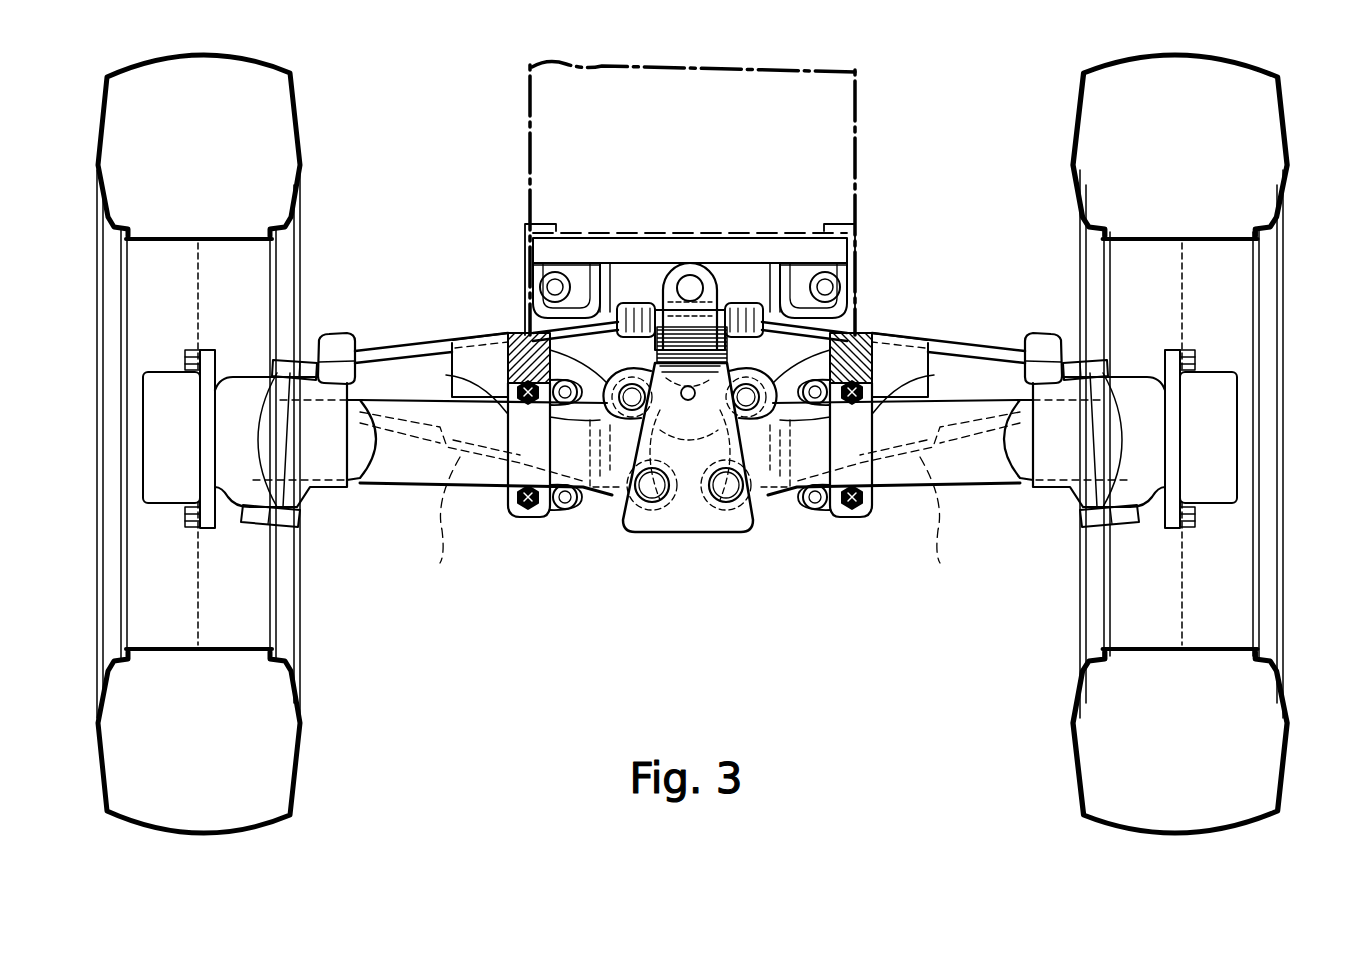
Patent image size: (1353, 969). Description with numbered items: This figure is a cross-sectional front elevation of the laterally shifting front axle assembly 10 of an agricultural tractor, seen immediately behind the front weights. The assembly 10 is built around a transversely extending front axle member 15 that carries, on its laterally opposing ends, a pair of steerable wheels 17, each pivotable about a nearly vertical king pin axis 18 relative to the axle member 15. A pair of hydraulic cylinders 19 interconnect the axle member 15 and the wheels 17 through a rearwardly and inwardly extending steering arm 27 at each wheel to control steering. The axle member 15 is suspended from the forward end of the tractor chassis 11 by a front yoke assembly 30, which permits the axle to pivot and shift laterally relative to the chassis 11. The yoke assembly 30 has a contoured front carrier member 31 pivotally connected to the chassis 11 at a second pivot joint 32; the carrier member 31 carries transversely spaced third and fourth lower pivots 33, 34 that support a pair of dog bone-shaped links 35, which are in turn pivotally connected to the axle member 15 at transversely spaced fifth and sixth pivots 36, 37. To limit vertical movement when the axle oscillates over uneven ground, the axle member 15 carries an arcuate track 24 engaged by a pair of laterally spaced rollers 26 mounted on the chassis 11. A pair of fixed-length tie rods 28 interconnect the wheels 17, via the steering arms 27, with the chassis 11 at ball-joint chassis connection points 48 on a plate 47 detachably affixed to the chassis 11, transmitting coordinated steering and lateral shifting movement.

The front axle assembly 10 is at (972, 87).
The tractor chassis 11 is at (682, 68).
The front axle member 15 is at (403, 472).
The steerable wheels 17 is at (168, 57).
The king pin axes 18 is at (265, 527).
The hydraulic cylinders 19 is at (440, 563).
The arcuate track 24 is at (770, 322).
The rollers 26 is at (597, 278).
The steering arm 27 is at (273, 360).
The tie rods 28 is at (400, 343).
The front yoke assembly 30 is at (745, 550).
The front carrier member 31 is at (757, 532).
The second pivot joint 32 is at (688, 274).
The third lower pivot 33 is at (687, 532).
The fourth lower pivot 34 is at (628, 534).
The dog bone-shaped links 35 is at (446, 375).
The fifth pivot 36 is at (733, 308).
The sixth pivot 37 is at (530, 335).
The plate 47 is at (652, 297).
The chassis connection points 48 is at (643, 303).